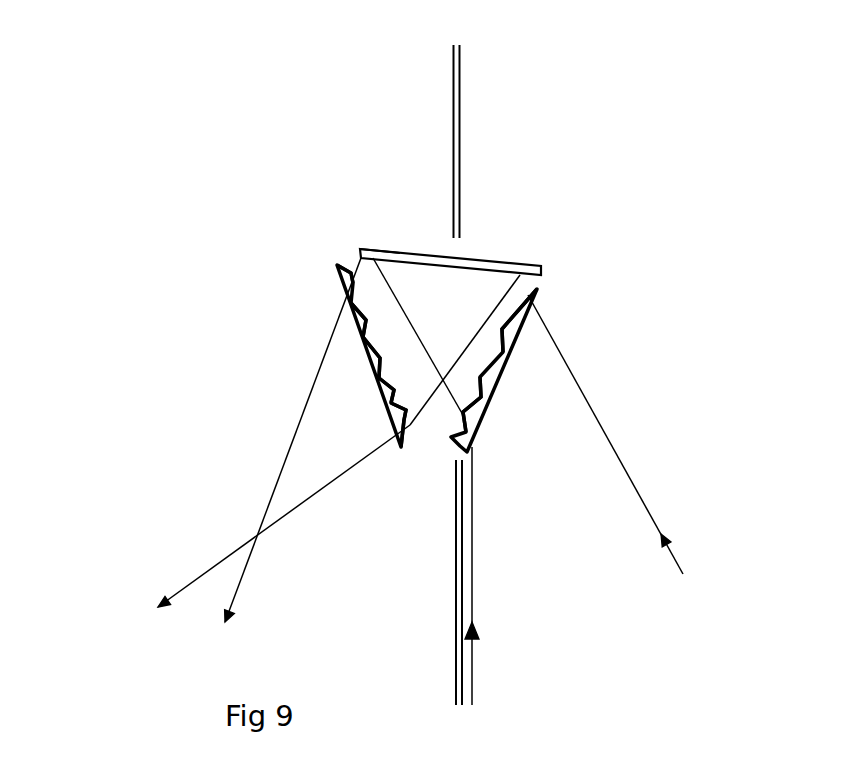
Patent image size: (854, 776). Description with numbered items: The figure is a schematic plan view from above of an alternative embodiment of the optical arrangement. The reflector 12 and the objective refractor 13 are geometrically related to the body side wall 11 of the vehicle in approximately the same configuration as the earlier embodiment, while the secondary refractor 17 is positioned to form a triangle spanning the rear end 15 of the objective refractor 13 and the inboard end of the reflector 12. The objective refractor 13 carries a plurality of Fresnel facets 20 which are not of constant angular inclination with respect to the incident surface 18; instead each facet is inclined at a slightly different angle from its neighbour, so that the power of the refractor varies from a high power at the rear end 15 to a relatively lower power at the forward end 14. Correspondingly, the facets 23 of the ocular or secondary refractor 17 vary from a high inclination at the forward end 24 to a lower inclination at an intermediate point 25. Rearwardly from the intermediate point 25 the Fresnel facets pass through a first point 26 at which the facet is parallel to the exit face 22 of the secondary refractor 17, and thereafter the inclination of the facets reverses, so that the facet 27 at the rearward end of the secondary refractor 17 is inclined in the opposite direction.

The body side wall 11 is at (460, 122).
The reflector 12 is at (488, 258).
The objective refractor 13 is at (477, 408).
The forward end 14 is at (537, 288).
The rear end 15 is at (455, 448).
The secondary refractor 17 is at (367, 322).
The incident surface 18 is at (522, 337).
The Fresnel facets 20 is at (487, 360).
The exit face 22 is at (352, 312).
The facets 23 is at (388, 272).
The forward end 24 is at (345, 263).
The intermediate point 25 is at (362, 350).
The first point 26 is at (380, 390).
The facet 27 is at (400, 418).